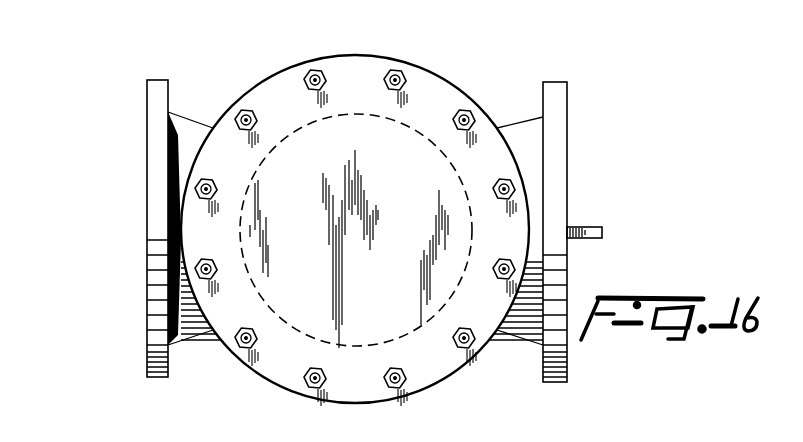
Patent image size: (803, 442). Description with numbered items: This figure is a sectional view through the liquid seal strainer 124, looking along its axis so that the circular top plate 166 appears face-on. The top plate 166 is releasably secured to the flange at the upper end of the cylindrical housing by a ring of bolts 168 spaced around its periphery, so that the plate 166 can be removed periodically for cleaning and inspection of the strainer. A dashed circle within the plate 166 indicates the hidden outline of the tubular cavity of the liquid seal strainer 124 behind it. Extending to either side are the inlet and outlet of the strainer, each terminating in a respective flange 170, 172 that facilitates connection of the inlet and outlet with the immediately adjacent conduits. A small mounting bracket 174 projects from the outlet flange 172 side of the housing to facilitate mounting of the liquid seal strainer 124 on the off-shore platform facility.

The liquid seal strainer 124 is at (425, 134).
The top plate 166 is at (434, 78).
The bolts 168 is at (403, 74).
The inlet flange 170 is at (157, 137).
The outlet flange 172 is at (558, 142).
The mounting bracket 174 is at (597, 228).